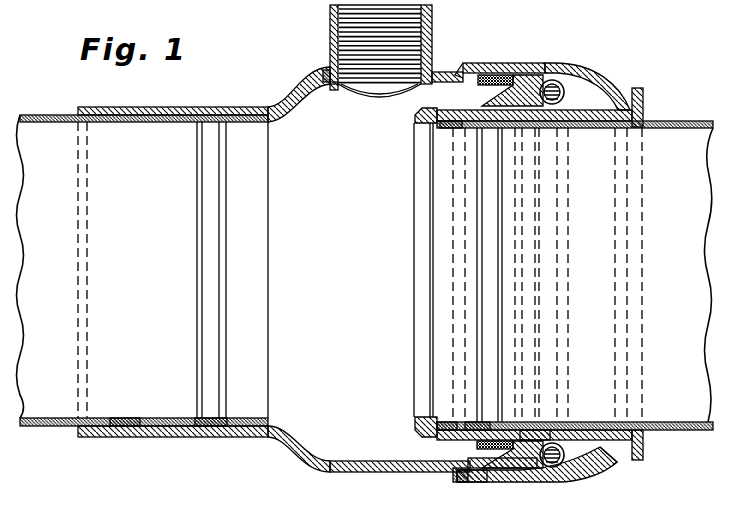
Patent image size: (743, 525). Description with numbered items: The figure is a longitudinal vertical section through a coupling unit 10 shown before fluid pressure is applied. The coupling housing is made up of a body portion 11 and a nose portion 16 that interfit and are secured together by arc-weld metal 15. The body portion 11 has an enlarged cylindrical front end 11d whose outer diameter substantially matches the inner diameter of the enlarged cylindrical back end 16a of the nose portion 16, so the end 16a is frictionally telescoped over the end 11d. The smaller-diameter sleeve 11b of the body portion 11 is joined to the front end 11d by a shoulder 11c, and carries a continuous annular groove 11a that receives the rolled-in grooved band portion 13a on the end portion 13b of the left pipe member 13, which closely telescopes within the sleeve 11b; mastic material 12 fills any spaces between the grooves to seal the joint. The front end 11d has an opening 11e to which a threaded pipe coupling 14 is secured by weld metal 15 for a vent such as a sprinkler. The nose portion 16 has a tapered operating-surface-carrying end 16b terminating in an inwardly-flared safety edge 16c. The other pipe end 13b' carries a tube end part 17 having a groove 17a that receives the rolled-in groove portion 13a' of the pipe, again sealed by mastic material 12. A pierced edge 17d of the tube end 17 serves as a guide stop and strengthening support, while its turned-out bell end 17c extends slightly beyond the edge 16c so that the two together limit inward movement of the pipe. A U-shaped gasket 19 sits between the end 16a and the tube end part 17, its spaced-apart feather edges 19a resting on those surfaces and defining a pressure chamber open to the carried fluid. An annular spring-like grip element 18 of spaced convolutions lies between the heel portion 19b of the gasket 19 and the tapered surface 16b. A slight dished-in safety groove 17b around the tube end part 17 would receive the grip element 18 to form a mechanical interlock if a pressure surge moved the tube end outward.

The coupling unit 10 is at (522, 62).
The body portion 11 is at (274, 283).
The annular groove 11a is at (191, 437).
The sleeve 11b is at (150, 437).
The shoulder 11c is at (295, 98).
The enlarged cylindrical front end 11d is at (399, 474).
The opening 11e is at (334, 90).
The mastic material 12 is at (470, 112).
The pipe member 13 is at (54, 113).
The rolled-in grooved band portion 13a is at (189, 406).
The rolled-in groove portion 13a' is at (428, 404).
The end portion of pipe member 13b is at (117, 406).
The other end of pipe member 13b' is at (418, 135).
The threaded pipe coupling 14 is at (329, 22).
The arc-weld metal 15 is at (328, 68).
The nose portion 16 is at (563, 278).
The enlarged cylindrical back end 16a is at (484, 482).
The tapered operating-surface-carrying end 16b is at (587, 72).
The safety edge 16c is at (620, 463).
The tube end part 17 is at (517, 279).
The groove 17a is at (458, 440).
The safety groove 17b is at (532, 422).
The bell end 17c is at (640, 88).
The pierced edge 17d is at (417, 423).
The grip element 18 is at (596, 105).
The U-shaped gasket 19 is at (533, 125).
The feather edges 19a is at (507, 73).
The heel portion 19b is at (542, 78).